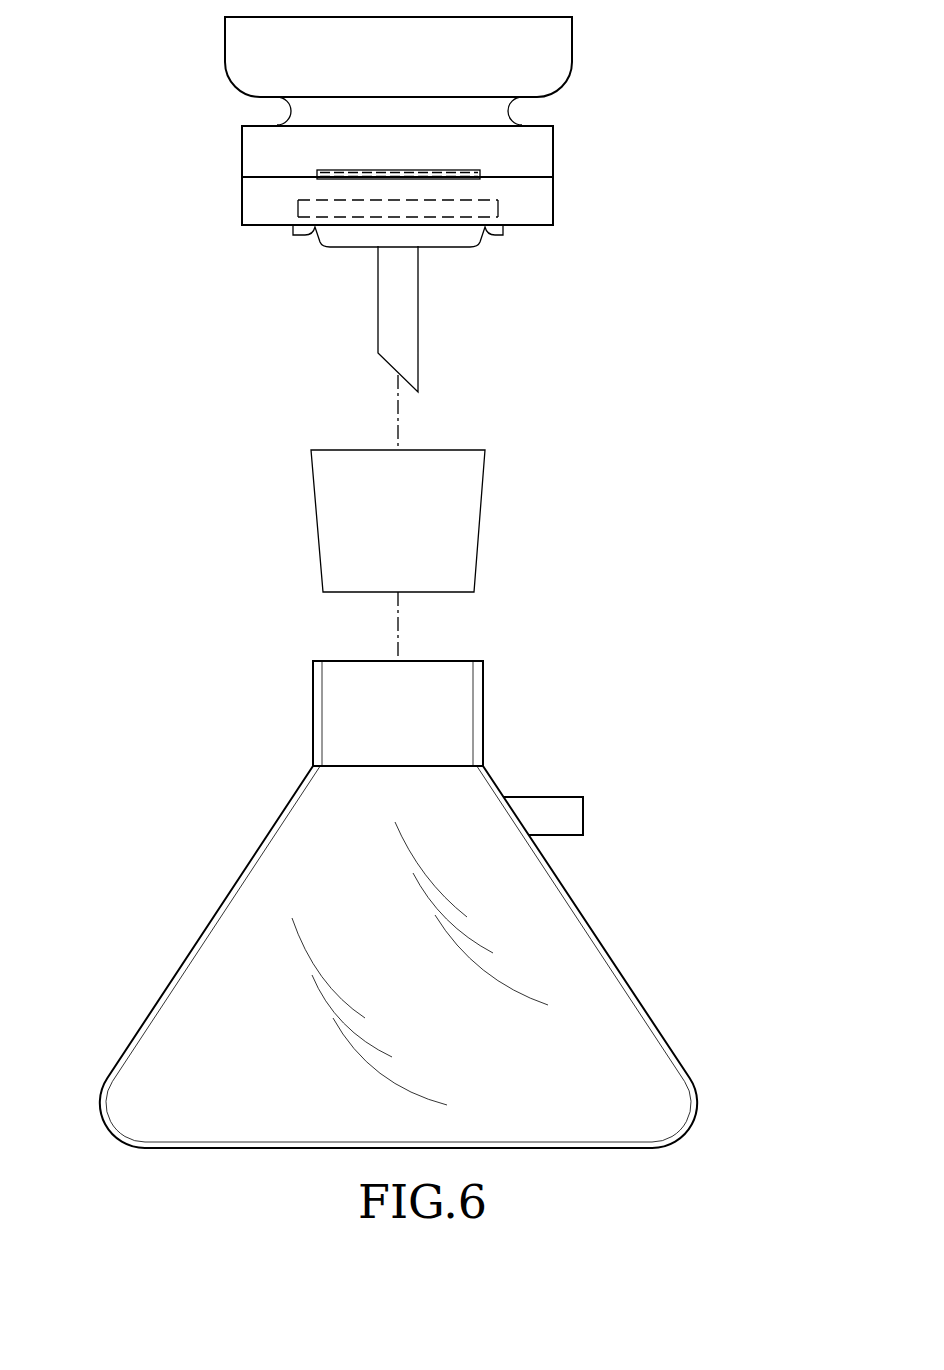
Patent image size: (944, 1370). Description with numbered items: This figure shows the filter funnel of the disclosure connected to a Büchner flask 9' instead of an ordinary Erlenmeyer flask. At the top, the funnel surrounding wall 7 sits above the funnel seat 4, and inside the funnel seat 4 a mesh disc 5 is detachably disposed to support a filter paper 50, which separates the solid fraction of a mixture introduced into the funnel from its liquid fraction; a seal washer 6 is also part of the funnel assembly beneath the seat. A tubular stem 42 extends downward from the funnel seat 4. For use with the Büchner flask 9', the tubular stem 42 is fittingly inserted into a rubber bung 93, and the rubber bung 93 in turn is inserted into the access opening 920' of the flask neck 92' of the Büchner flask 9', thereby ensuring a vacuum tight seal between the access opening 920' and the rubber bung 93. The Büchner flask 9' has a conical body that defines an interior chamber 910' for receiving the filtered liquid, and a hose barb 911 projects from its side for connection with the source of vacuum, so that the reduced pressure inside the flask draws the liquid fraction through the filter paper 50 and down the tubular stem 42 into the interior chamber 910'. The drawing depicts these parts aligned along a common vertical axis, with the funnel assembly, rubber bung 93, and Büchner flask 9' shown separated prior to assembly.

The funnel surrounding wall 7 is at (580, 57).
The funnel seat 4 is at (229, 176).
The filter paper 50 is at (467, 170).
The mesh disc 5 is at (480, 179).
The seal washer 6 is at (455, 218).
The tubular stem 42 is at (380, 306).
The rubber bung 93 is at (460, 500).
The flask neck 92' is at (340, 713).
The access opening 920' is at (360, 687).
The hose barb 911 is at (553, 797).
The interior chamber 910' is at (398, 957).
The Büchner flask 9' is at (422, 954).